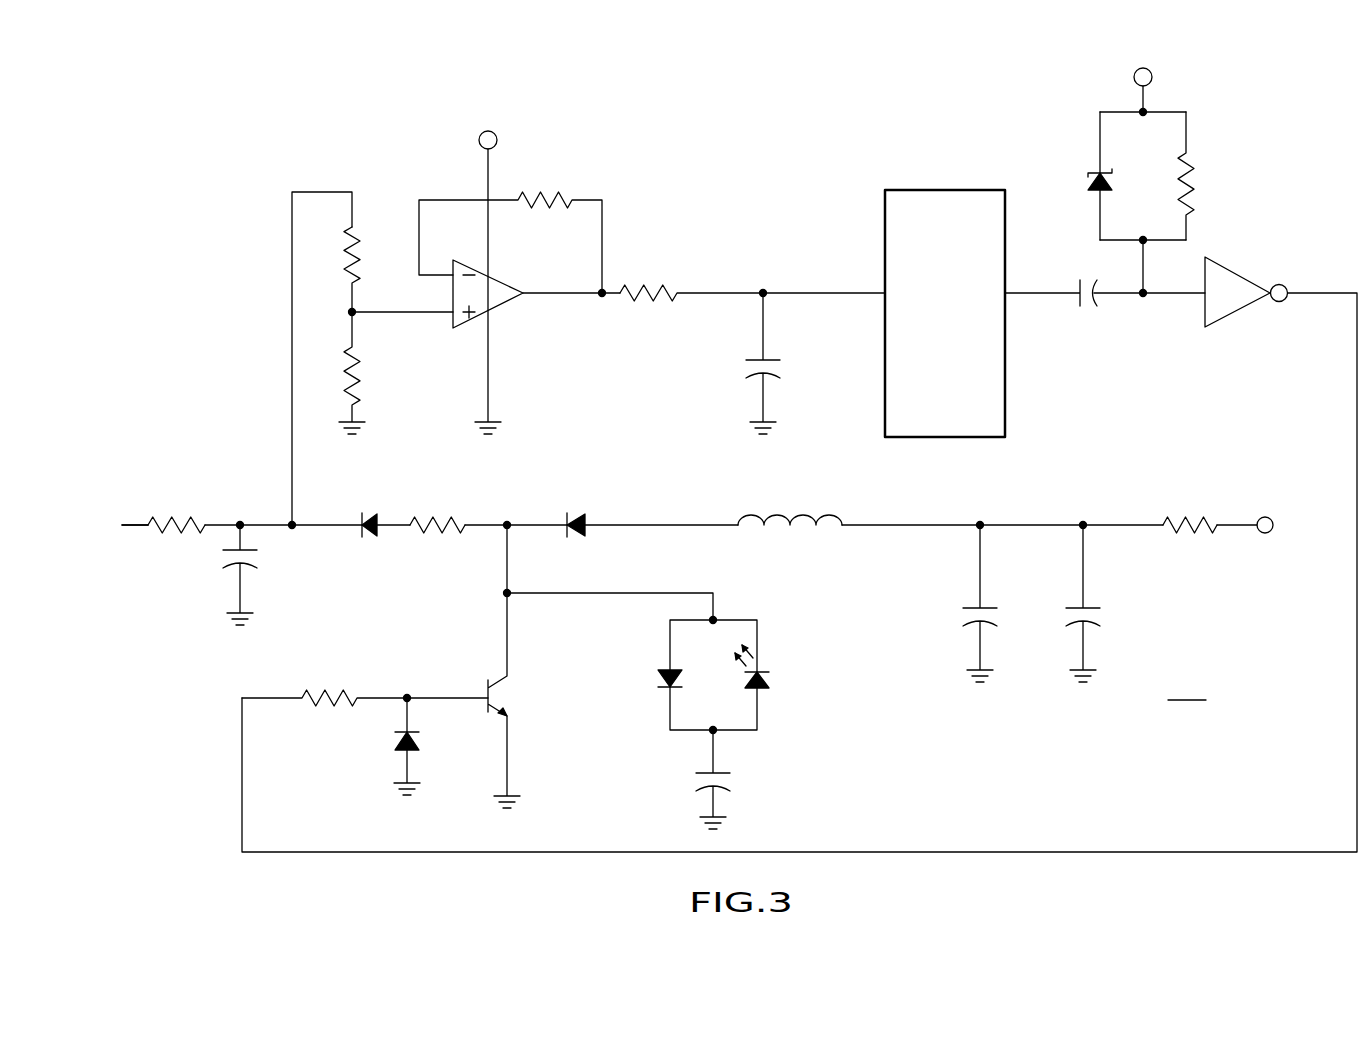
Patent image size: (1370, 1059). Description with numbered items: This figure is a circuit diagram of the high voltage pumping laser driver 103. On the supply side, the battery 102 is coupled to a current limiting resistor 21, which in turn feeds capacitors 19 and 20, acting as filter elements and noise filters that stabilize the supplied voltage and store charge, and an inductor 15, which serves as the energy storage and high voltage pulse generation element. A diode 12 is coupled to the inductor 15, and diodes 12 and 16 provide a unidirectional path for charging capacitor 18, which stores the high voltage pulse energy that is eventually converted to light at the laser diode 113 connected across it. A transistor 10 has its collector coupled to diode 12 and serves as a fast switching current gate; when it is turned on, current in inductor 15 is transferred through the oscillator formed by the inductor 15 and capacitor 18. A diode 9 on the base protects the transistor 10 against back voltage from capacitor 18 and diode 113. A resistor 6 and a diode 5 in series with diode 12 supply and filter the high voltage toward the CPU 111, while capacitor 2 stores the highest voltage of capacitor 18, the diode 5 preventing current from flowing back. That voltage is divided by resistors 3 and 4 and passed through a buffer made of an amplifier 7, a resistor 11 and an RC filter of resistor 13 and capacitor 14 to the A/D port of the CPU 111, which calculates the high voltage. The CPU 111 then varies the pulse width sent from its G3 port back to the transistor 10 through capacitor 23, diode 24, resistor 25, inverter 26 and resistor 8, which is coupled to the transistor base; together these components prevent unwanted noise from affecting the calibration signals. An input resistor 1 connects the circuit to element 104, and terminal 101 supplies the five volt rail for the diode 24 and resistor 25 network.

The input resistor 1 is at (176, 505).
The capacitor 2 is at (253, 575).
The resistor 3 is at (365, 269).
The resistor 4 is at (363, 373).
The diode 5 is at (368, 504).
The resistor 6 is at (437, 502).
The amplifier 7 is at (506, 303).
The resistor 8 is at (365, 679).
The diode 9 is at (420, 746).
The transistor 10 is at (519, 700).
The resistor 11 is at (510, 224).
The diode 12 is at (578, 504).
The resistor 13 is at (752, 274).
The capacitor 14 is at (786, 363).
The inductor 15 is at (790, 498).
The diode 16 is at (654, 662).
The capacitor 18 is at (733, 779).
The capacitor 19 is at (1000, 603).
The capacitor 20 is at (1103, 603).
The resistor 21 is at (1190, 505).
The capacitor 23 is at (1105, 314).
The diode 24 is at (1081, 176).
The resistor 25 is at (1207, 176).
The inverter 26 is at (1244, 309).
The 5V supply terminal 101 is at (1130, 71).
The battery 102 is at (1272, 511).
The laser driver 103 is at (1187, 684).
The connection to element 104 is at (105, 530).
The CPU 111 is at (885, 224).
The laser diode 113 is at (779, 663).